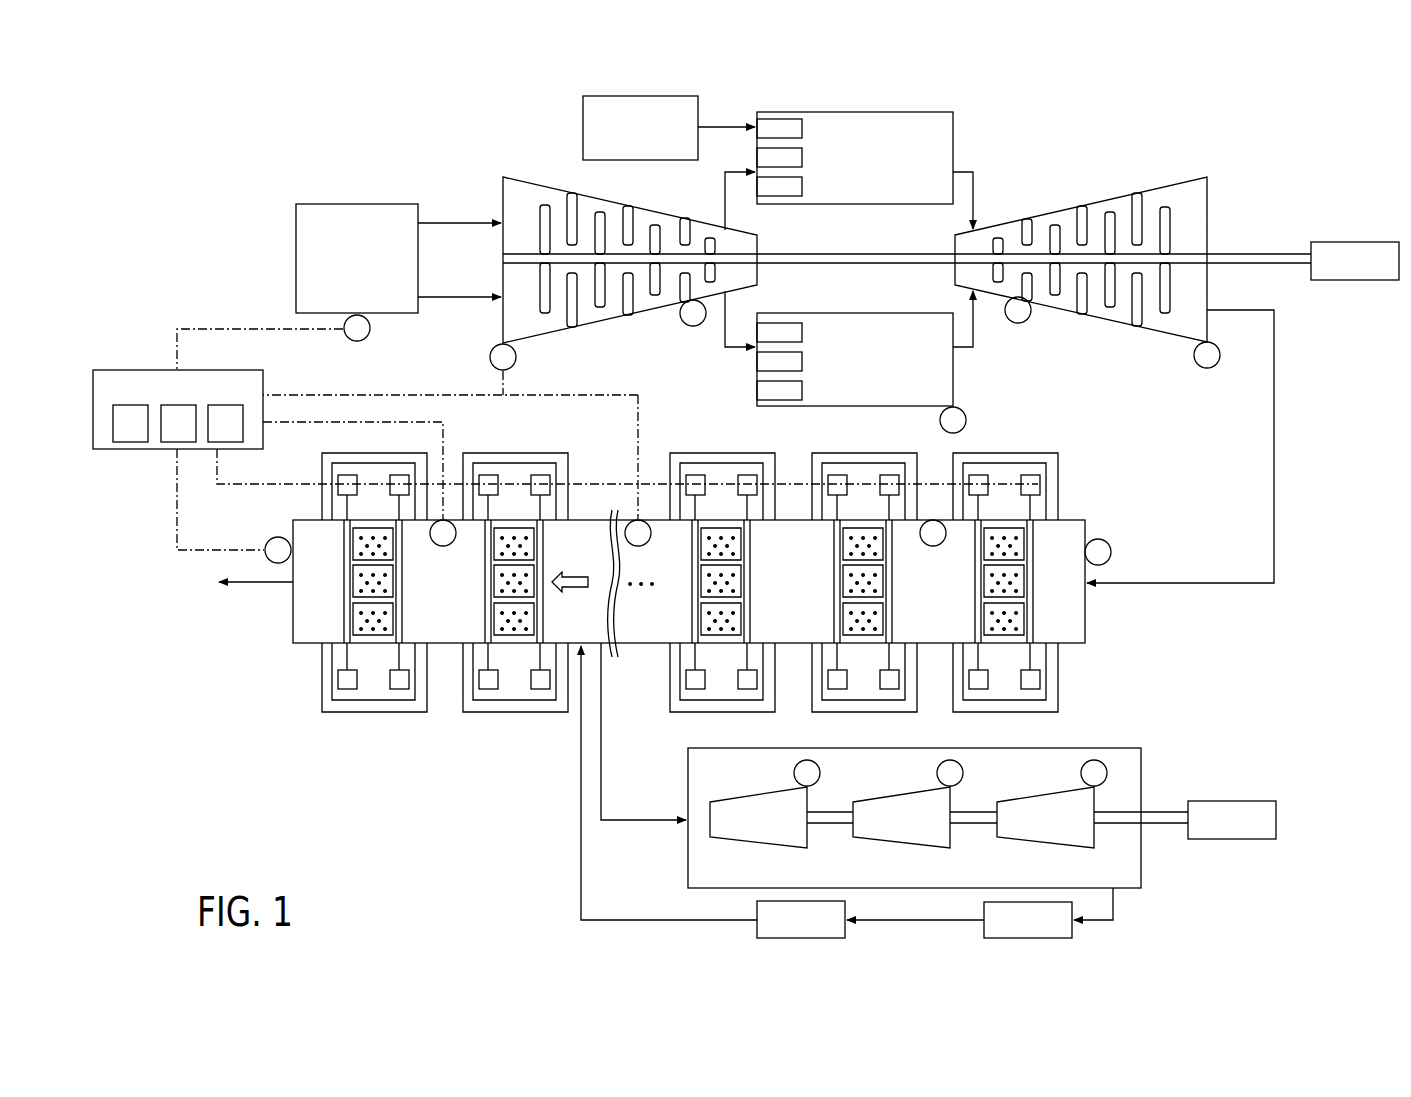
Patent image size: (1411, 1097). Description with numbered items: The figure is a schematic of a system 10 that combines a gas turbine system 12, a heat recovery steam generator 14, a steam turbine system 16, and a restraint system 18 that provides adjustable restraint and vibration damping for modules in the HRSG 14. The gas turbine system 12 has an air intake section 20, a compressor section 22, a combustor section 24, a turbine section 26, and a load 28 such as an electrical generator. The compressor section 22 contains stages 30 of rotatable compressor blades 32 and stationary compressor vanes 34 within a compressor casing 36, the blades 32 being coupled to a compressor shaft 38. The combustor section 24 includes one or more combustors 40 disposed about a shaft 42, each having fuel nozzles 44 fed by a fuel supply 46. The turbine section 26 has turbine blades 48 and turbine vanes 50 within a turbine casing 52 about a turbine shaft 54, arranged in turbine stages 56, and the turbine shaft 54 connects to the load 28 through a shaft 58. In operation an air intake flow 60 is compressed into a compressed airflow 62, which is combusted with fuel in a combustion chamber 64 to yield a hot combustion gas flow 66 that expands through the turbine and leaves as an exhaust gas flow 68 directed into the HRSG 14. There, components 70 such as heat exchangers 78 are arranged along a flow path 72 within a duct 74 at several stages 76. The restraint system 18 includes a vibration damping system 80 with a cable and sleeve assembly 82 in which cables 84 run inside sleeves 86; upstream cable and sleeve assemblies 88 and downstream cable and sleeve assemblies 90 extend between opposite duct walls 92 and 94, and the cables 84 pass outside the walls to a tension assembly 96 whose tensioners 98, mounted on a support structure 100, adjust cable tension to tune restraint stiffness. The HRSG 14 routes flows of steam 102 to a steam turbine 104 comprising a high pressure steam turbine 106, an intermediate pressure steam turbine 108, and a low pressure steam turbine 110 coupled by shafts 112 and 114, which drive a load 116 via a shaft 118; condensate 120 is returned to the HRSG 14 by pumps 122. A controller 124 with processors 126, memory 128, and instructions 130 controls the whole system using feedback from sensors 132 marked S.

The system 10 is at (1325, 140).
The gas turbine system 12 is at (1200, 132).
The heat recovery steam generator 14 is at (1163, 640).
The steam turbine system 16 is at (1283, 868).
The restraint system 18 is at (333, 455).
The air intake section 20 is at (357, 204).
The compressor section 22 is at (513, 142).
The combustor section 24 is at (925, 110).
The turbine section 26 is at (1057, 157).
The load 28 is at (1356, 242).
The compressor stages 30 is at (555, 347).
The compressor blades 32 is at (653, 224).
The compressor vanes 34 is at (628, 308).
The compressor casing 36 is at (520, 178).
The compressor shaft 38 is at (503, 258).
The combustor 40 is at (955, 136).
The shaft 42 is at (795, 255).
The fuel nozzles 44 is at (802, 128).
The fuel supply 46 is at (583, 122).
The turbine blades 48 is at (1110, 213).
The turbine vanes 50 is at (1082, 292).
The turbine casing 52 is at (1175, 185).
The turbine shaft 54 is at (1190, 254).
The turbine stages 56 is at (1012, 219).
The shaft 58 is at (1242, 266).
The air intake flow 60 is at (490, 298).
The compressed airflow 62 is at (727, 213).
The combustion chamber 64 is at (895, 164).
The hot combustion gas flow 66 is at (977, 316).
The exhaust gas flow 68 is at (1275, 385).
The components 70 is at (1087, 600).
The flow path 72 is at (572, 577).
The duct 74 is at (1086, 625).
The stages 76 is at (372, 718).
The heat exchangers 78 is at (985, 615).
The vibration damping system 80 is at (337, 481).
The cable and sleeve assembly 82 is at (1060, 492).
The cables 84 is at (1032, 678).
The sleeves 86 is at (964, 561).
The upstream cable and sleeve assemblies 88 is at (1042, 540).
The downstream cable and sleeve assemblies 90 is at (955, 633).
The duct wall 92 is at (607, 520).
The duct wall 94 is at (617, 657).
The tension assembly 96 is at (975, 680).
The tensioners 98 is at (980, 475).
The support structure 100 is at (970, 453).
The flows of steam 102 is at (601, 772).
The steam turbine 104 is at (1141, 855).
The high pressure steam turbine 106 is at (735, 837).
The intermediate pressure steam turbine 108 is at (900, 845).
The low pressure steam turbine 110 is at (1070, 848).
The shaft 112 is at (830, 812).
The shaft 114 is at (978, 812).
The load 116 is at (1278, 818).
The shaft 118 is at (1165, 812).
The condensate 120 is at (983, 918).
The pumps 122 is at (757, 918).
The controller 124 is at (135, 369).
The processors 126 is at (130, 449).
The memory 128 is at (170, 449).
The instructions 130 is at (217, 449).
The sensors 132 is at (372, 328).